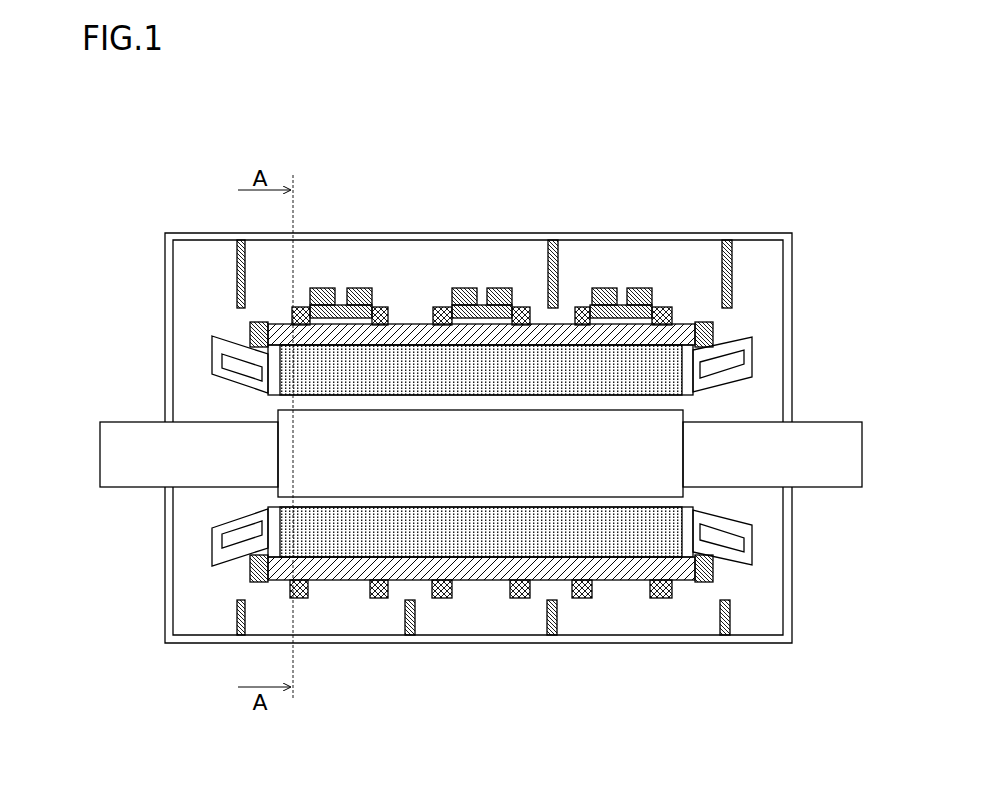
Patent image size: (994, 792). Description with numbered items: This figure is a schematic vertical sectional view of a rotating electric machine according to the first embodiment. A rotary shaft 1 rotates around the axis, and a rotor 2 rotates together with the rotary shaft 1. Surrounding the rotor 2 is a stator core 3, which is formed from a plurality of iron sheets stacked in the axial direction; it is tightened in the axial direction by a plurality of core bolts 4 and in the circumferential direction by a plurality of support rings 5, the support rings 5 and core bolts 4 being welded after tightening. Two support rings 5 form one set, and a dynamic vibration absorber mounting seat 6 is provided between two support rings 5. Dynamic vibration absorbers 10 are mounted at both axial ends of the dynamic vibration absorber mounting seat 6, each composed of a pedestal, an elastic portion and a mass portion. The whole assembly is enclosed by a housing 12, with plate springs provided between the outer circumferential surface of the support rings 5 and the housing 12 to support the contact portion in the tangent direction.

The rotary shaft 1 is at (807, 445).
The rotor 2 is at (640, 445).
The stator core 3 is at (642, 537).
The core bolt 4 is at (413, 324).
The support ring 5 is at (302, 307).
The dynamic vibration absorber mounting seat 6 is at (342, 305).
The dynamic vibration absorber 10 is at (322, 288).
The housing 12 is at (762, 232).